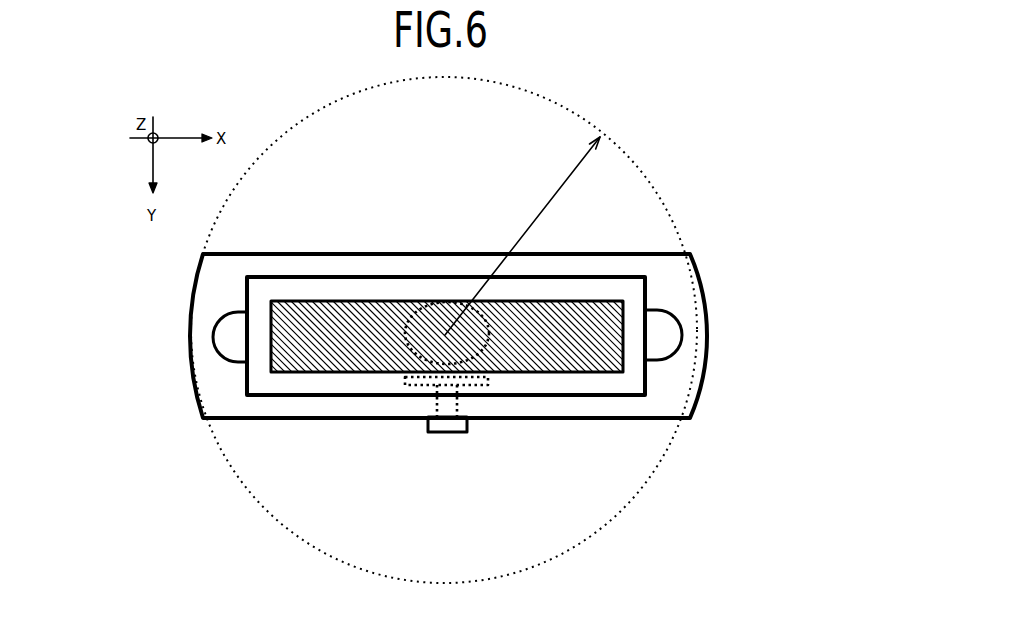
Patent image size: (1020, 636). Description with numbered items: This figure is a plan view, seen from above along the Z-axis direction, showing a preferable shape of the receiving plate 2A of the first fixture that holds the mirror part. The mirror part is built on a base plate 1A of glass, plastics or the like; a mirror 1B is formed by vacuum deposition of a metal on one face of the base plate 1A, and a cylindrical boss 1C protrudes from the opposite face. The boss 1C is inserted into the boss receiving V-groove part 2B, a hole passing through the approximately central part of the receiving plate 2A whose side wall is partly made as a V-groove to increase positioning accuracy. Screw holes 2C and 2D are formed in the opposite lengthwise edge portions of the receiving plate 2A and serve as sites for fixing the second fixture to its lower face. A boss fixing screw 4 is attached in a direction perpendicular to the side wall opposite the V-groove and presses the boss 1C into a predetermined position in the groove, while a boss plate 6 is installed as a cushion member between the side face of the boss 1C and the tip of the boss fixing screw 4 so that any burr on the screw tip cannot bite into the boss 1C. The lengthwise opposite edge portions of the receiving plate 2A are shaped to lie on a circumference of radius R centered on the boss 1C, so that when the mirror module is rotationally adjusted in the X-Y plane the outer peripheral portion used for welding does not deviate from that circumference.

The base plate 1A is at (647, 373).
The mirror 1B is at (343, 300).
The boss 1C is at (445, 325).
The receiving plate 2A is at (705, 300).
The boss receiving V-groove part 2B is at (402, 330).
The screw hole 2C is at (213, 337).
The screw hole 2D is at (682, 337).
The boss fixing screw 4 is at (447, 432).
The boss plate 6 is at (425, 376).
The radius R is at (522, 236).